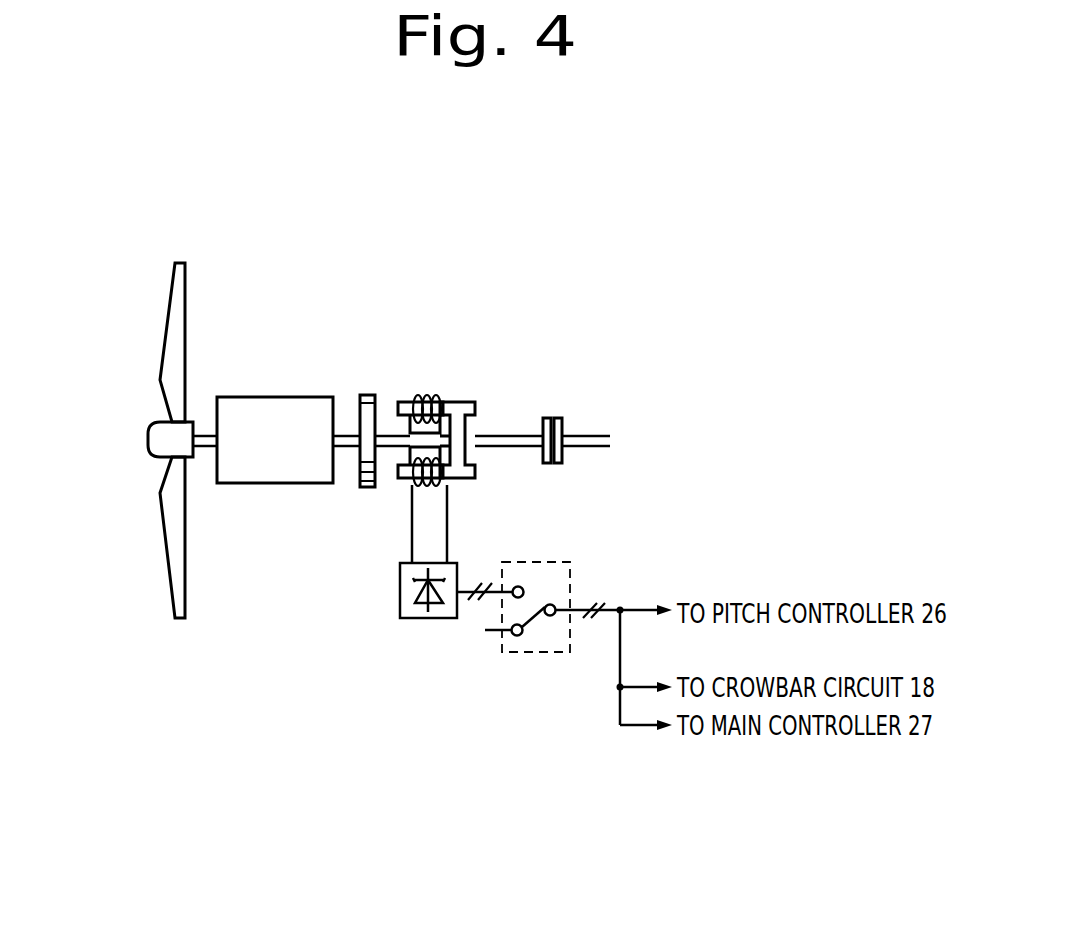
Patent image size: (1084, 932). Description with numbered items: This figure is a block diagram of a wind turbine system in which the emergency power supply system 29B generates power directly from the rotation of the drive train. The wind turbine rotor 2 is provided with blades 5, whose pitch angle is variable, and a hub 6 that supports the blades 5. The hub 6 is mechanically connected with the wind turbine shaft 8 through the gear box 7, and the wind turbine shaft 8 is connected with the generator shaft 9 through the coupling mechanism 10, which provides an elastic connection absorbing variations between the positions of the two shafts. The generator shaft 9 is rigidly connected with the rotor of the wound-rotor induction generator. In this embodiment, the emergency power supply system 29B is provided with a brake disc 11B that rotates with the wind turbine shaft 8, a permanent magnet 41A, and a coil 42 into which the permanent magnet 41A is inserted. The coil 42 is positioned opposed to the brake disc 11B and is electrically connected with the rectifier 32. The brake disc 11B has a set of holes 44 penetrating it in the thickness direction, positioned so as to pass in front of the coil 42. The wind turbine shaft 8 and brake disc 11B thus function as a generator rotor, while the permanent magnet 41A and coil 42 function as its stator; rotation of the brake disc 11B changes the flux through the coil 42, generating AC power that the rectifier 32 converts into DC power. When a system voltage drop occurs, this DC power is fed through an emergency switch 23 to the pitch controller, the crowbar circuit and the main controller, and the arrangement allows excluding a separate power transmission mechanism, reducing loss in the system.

The wind turbine rotor 2 is at (153, 250).
The blades 5 is at (168, 327).
The hub 6 is at (148, 442).
The gear box 7 is at (268, 397).
The holes 44 is at (359, 413).
The brake disc 11B is at (368, 395).
The coil 42 is at (416, 397).
The permanent magnet 41A is at (460, 401).
The coupling mechanism 10 is at (558, 418).
The wind turbine shaft 8 is at (515, 450).
The generator shaft 9 is at (583, 452).
The rectifier 32 is at (432, 620).
The switch 23 is at (537, 623).
The emergency power supply system 29B is at (373, 655).